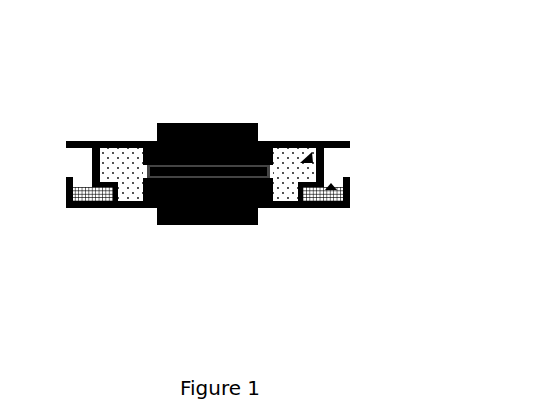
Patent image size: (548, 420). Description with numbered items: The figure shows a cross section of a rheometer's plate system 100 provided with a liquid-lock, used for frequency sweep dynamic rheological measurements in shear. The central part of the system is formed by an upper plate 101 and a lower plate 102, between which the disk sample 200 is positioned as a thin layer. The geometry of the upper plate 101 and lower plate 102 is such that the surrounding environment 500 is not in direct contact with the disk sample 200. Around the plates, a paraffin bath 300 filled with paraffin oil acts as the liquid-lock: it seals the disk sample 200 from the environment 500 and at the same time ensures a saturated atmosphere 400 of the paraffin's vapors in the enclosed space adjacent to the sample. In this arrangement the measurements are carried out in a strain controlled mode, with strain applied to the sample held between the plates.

The plate system 100 is at (197, 108).
The upper plate 101 is at (240, 124).
The lower plate 102 is at (256, 221).
The disk sample 200 is at (250, 170).
The paraffin bath 300 is at (349, 178).
The saturated atmosphere 400 is at (350, 142).
The environment 500 is at (87, 208).